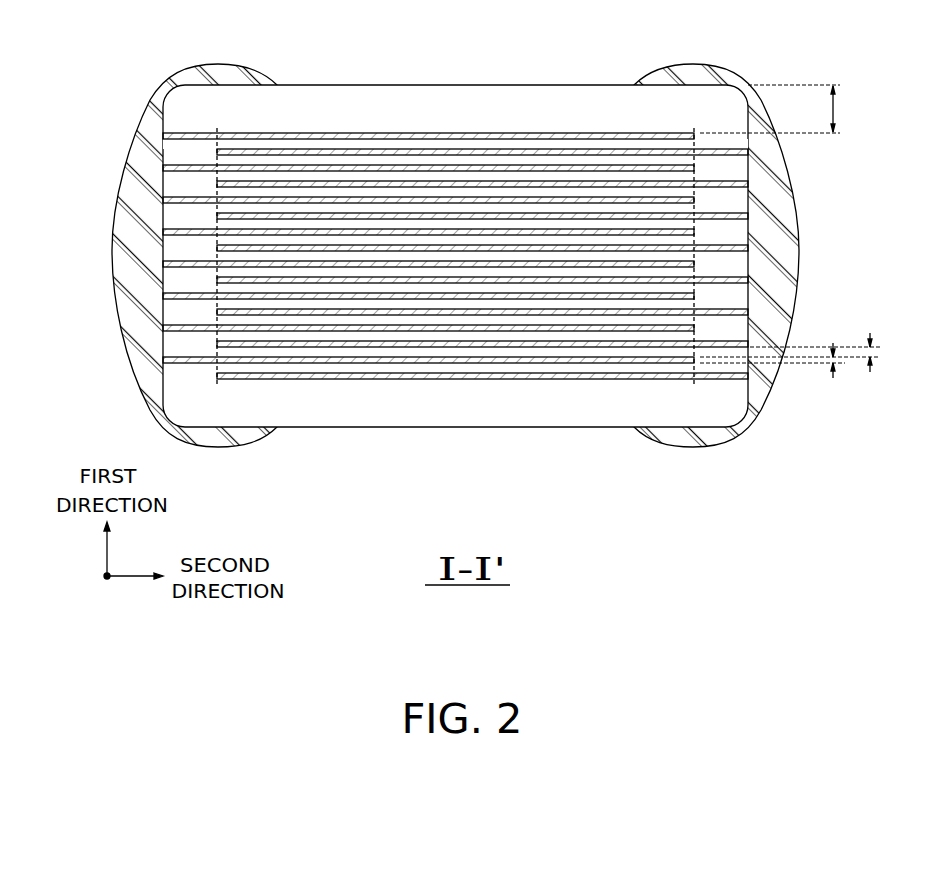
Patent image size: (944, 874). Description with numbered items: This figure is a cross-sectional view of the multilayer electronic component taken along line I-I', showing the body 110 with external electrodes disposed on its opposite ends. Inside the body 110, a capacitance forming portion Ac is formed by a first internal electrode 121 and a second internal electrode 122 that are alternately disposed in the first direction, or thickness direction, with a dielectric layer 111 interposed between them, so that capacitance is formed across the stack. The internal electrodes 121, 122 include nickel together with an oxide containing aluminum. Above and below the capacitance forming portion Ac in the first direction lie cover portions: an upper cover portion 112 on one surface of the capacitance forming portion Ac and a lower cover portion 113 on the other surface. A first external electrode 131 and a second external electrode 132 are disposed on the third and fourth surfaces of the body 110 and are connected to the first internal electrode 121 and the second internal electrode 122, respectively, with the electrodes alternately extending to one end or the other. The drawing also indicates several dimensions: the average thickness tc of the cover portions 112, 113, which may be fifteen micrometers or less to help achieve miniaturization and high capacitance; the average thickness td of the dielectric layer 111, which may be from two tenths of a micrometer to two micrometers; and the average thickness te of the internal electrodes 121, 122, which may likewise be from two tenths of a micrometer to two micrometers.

The body 110 is at (398, 85).
The dielectric layer 111 is at (338, 160).
The upper cover portion 112 is at (460, 98).
The lower cover portion 113 is at (424, 420).
The first internal electrode 121 is at (538, 136).
The second internal electrode 122 is at (553, 150).
The first external electrode 131 is at (117, 234).
The second external electrode 132 is at (799, 234).
The capacitance forming portion Ac is at (512, 380).
The average thickness of the cover portions tc is at (778, 109).
The average thickness of the dielectric layer td is at (797, 352).
The average thickness of the internal electrodes te is at (778, 362).